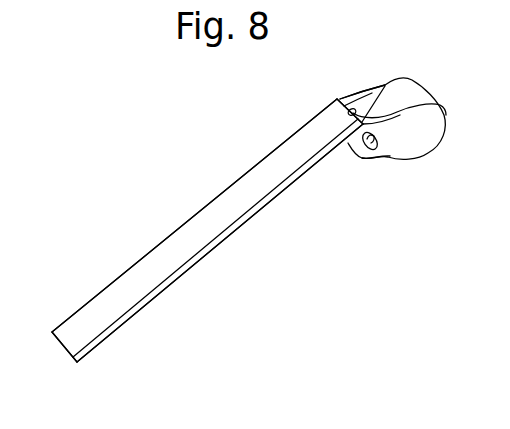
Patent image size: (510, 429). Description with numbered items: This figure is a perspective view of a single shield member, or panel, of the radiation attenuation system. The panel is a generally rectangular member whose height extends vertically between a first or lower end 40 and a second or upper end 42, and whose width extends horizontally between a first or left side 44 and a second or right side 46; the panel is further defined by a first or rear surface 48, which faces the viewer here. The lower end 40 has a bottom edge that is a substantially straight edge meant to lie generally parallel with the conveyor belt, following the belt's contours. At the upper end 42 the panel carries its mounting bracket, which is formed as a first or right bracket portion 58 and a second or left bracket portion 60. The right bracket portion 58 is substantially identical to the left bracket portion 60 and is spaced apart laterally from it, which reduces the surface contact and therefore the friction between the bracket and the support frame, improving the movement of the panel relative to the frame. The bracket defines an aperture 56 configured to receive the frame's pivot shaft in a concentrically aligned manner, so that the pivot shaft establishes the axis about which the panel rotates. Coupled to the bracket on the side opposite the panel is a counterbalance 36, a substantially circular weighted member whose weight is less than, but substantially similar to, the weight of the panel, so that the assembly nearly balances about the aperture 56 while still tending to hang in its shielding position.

The counterbalance 36 is at (410, 93).
The lower end 40 is at (65, 348).
The upper end 42 is at (328, 117).
The left side 44 is at (202, 210).
The right side 46 is at (150, 303).
The rear surface 48 is at (80, 320).
The aperture 56 is at (354, 152).
The right bracket portion 58 is at (380, 158).
The left bracket portion 60 is at (369, 90).